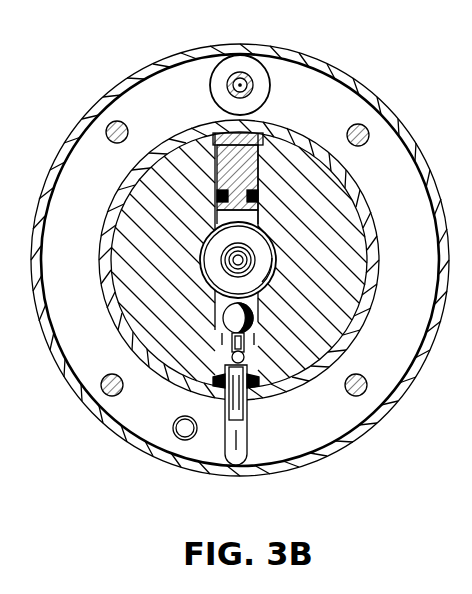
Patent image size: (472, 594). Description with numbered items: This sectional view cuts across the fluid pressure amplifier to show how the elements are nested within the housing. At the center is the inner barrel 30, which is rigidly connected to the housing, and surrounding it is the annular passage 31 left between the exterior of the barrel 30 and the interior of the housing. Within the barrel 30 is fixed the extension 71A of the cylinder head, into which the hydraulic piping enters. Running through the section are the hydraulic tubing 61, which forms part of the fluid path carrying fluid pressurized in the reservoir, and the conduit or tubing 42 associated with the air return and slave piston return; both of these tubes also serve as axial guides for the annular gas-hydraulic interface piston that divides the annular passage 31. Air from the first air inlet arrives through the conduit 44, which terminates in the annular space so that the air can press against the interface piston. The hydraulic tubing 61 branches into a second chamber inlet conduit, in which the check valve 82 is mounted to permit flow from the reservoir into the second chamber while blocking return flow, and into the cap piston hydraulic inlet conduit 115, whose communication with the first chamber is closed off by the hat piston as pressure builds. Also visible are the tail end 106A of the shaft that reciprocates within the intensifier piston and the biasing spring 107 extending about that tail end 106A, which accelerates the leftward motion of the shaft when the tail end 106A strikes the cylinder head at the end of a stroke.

The inner barrel 30 is at (153, 152).
The annular passage 31 is at (318, 72).
The conduit or tubing 42 is at (233, 74).
The biasing spring 107 is at (243, 262).
The tail end of the shaft 106A is at (268, 284).
The check valve 82 is at (233, 318).
The extension of the cylinder head 71A is at (163, 343).
The conduit 44 is at (185, 441).
The hydraulic tubing 61 is at (236, 462).
The cap piston hydraulic inlet conduit 115 is at (268, 388).